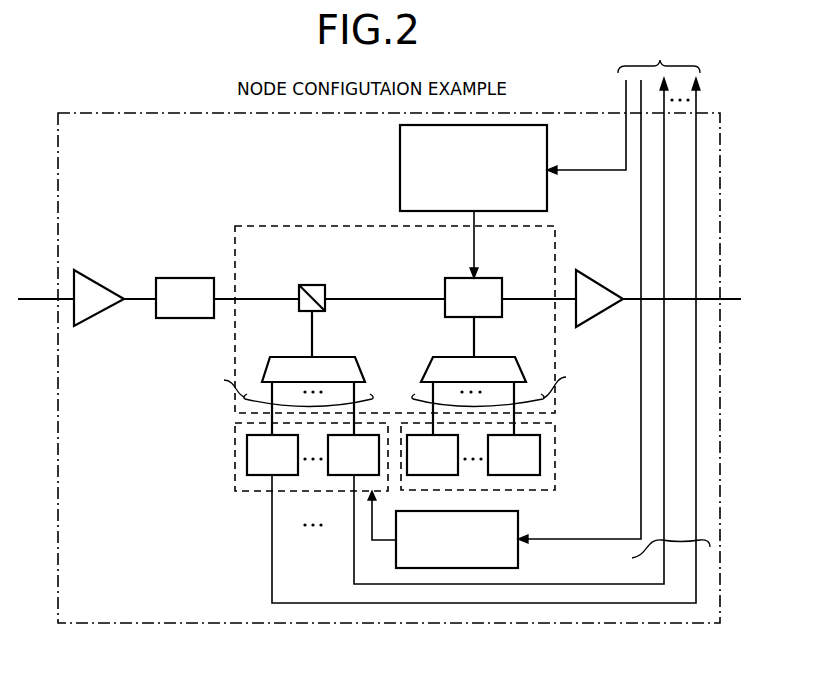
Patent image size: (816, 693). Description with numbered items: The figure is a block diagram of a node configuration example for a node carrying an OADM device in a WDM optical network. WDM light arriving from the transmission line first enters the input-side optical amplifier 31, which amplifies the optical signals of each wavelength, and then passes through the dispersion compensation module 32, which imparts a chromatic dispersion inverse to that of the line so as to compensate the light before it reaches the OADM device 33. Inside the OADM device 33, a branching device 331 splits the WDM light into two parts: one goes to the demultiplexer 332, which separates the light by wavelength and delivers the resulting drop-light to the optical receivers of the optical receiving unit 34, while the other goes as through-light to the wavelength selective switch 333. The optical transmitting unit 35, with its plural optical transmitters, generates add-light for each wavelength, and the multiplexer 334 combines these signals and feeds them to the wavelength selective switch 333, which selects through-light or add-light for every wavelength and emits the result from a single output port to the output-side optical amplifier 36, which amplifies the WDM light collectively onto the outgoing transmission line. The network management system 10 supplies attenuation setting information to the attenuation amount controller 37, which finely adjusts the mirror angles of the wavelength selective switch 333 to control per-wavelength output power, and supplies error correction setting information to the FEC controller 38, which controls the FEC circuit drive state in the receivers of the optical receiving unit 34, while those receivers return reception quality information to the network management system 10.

The network management system 10 is at (491, 320).
The input-side optical amplifier 31 is at (97, 273).
The dispersion compensation module 32 is at (183, 277).
The OADM device 33 is at (266, 227).
The branching device 331 is at (308, 285).
The demultiplexer 332 is at (290, 356).
The wavelength selective switch 333 is at (455, 278).
The multiplexer 334 is at (446, 356).
The optical receiving unit 34 is at (236, 446).
The optical transmitting unit 35 is at (556, 442).
The output-side optical amplifier 36 is at (597, 276).
The attenuation amount controller 37 is at (400, 172).
The FEC controller 38 is at (520, 556).